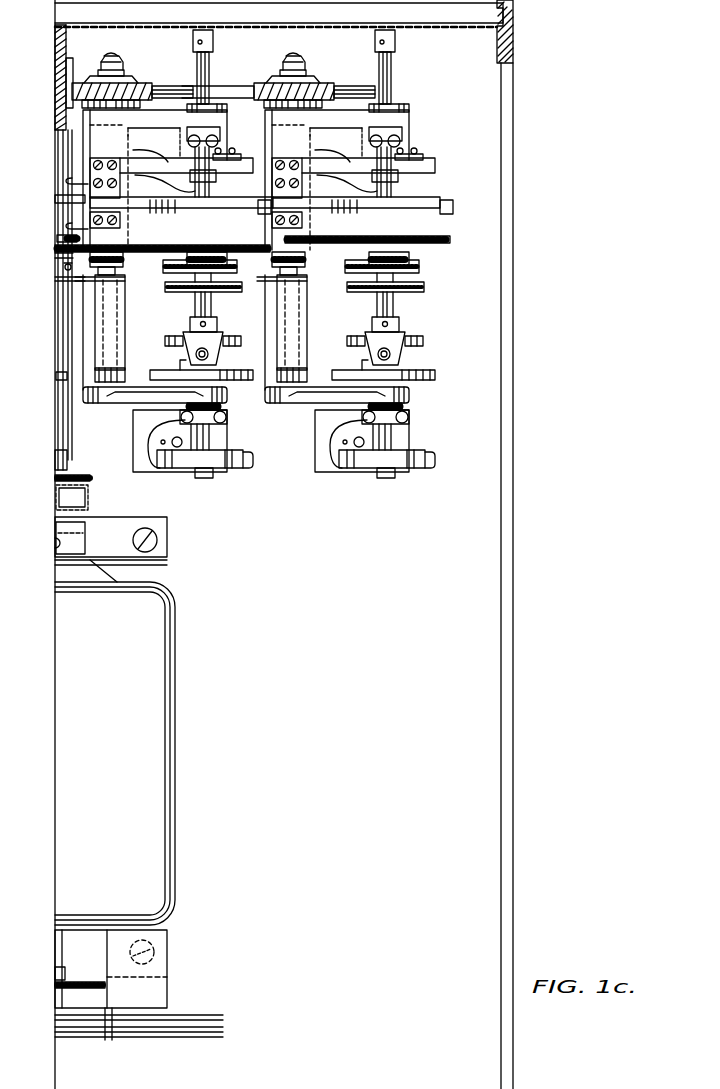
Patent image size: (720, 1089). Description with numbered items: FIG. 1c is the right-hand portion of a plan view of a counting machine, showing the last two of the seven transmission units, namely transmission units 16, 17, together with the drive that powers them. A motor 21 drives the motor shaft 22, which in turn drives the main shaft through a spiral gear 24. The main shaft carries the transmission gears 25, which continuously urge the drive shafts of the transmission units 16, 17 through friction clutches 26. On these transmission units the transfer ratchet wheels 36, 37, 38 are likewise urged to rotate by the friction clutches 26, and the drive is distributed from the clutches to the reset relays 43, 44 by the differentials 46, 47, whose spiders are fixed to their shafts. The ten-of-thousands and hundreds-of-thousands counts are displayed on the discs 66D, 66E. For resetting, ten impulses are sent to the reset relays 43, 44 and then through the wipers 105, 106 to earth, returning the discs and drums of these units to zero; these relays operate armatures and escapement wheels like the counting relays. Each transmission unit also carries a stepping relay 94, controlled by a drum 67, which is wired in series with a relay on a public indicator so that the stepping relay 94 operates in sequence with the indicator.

The transmission unit 16 is at (88, 380).
The transmission unit 17 is at (271, 328).
The motor 21 is at (103, 766).
The motor shaft 22 is at (63, 430).
The spiral gear 24 is at (67, 54).
The transmission gear 25 is at (140, 84).
The friction clutch 26 is at (278, 66).
The transfer ratchet wheel 36 is at (61, 372).
The transfer ratchet wheel 37 is at (242, 374).
The transfer ratchet wheel 38 is at (393, 364).
The reset relay 43 is at (157, 472).
The reset relay 44 is at (368, 455).
The differential 46 is at (184, 358).
The differential 47 is at (377, 308).
The display disc 66D is at (164, 33).
The display disc 66E is at (363, 71).
The drum 67 is at (459, 218).
The stepping relay 94 is at (135, 147).
The wiper 105 is at (168, 215).
The wiper 106 is at (356, 230).